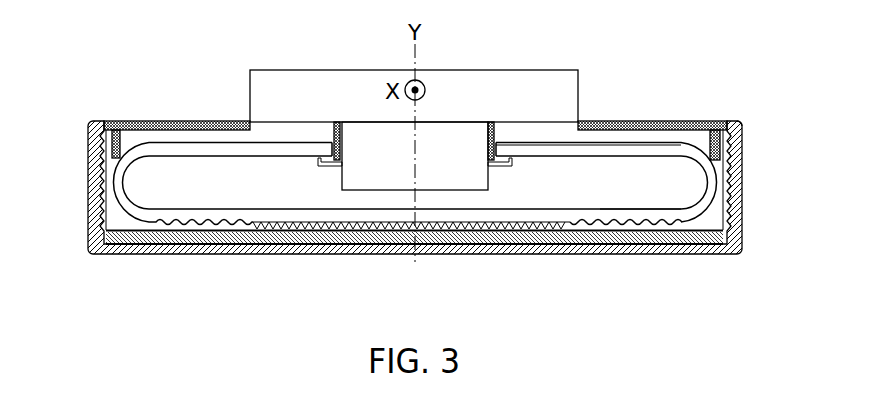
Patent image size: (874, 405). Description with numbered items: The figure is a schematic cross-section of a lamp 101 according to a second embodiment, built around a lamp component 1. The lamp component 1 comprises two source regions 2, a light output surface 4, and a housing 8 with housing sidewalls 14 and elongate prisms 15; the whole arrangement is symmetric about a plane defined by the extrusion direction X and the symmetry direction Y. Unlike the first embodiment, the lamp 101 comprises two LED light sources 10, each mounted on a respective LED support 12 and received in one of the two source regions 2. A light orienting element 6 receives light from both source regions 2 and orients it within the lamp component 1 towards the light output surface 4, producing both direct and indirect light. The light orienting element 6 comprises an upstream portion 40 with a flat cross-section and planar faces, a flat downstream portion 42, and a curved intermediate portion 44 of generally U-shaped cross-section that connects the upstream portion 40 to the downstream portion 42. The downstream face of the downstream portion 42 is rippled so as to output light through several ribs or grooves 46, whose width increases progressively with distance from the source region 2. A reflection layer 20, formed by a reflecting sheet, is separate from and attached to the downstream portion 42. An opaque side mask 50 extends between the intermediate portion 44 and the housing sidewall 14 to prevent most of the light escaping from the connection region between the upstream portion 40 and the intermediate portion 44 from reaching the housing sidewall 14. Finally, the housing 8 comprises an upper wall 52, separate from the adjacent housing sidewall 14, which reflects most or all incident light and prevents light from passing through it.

The lamp 101 is at (218, 57).
The lamp component 1 is at (180, 107).
The source region 2 is at (429, 174).
The light output surface 4 is at (474, 266).
The light orienting element 6 is at (738, 70).
The housing 8 is at (752, 203).
The LED light source 10 is at (327, 128).
The LED support 12 is at (343, 128).
The housing sidewall 14 is at (743, 189).
The elongate prism 15 is at (743, 140).
The reflection layer 20 is at (670, 212).
The upstream portion 40 is at (635, 150).
The downstream portion 42 is at (635, 217).
The intermediate portion 44 is at (716, 124).
The ribs or grooves 46 is at (552, 234).
The side mask 50 is at (722, 148).
The upper wall 52 is at (603, 125).